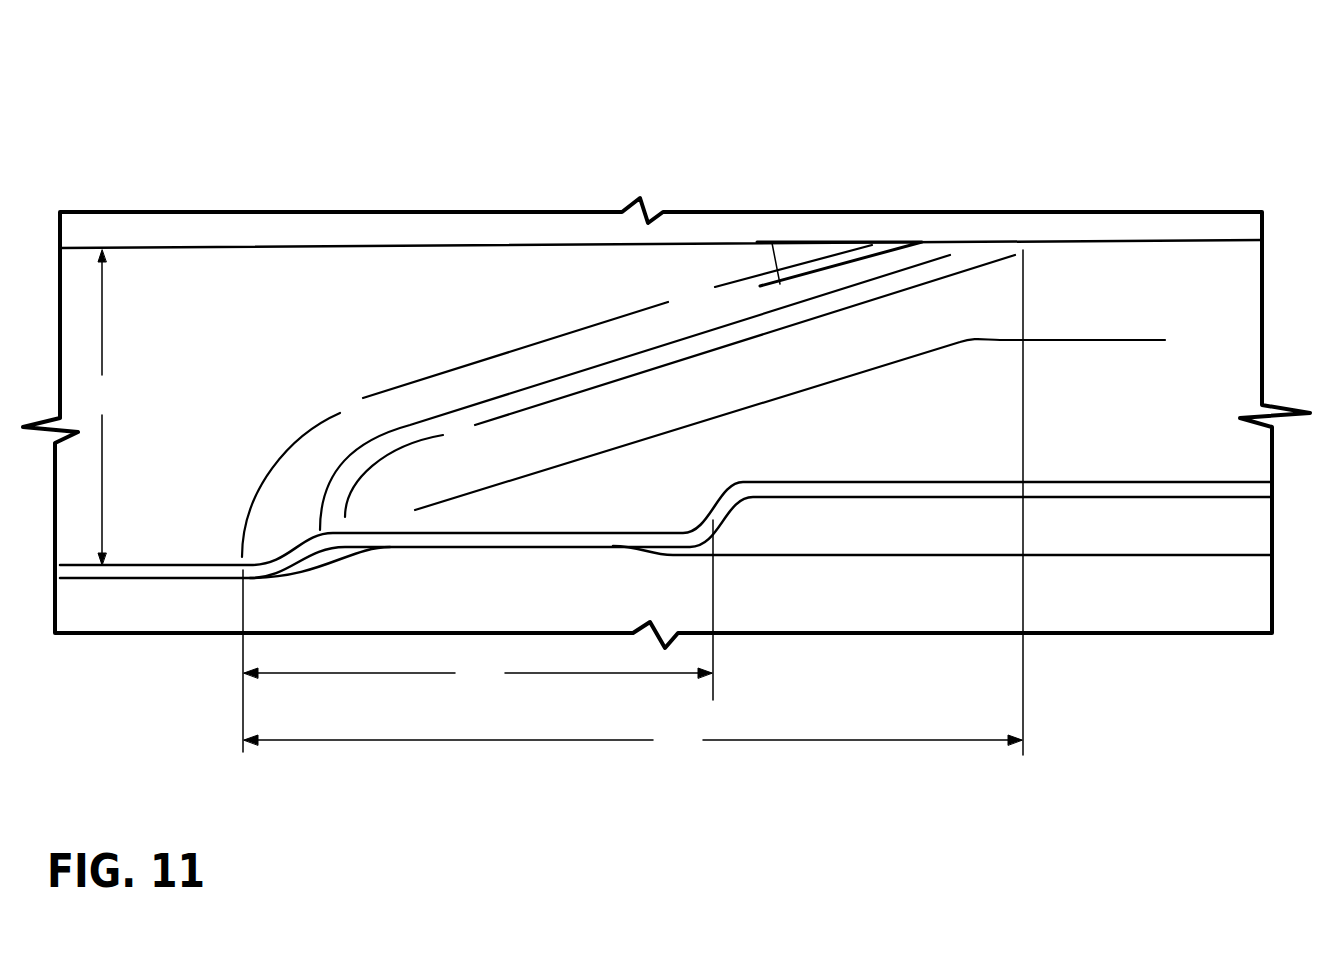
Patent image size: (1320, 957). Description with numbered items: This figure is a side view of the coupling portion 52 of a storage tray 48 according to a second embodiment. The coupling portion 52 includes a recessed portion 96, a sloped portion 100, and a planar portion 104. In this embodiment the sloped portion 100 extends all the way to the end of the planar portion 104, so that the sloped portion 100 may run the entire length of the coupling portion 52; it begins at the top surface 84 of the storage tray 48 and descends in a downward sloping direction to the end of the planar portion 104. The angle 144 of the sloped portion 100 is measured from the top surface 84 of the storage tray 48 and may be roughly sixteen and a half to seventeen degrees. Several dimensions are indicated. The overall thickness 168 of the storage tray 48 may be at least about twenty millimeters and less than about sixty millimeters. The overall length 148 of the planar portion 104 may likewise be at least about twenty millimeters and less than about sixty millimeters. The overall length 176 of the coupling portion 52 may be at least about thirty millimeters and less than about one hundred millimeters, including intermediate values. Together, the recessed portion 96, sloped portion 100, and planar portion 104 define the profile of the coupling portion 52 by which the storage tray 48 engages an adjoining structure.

The storage tray 48 is at (68, 147).
The coupling portion 52 is at (300, 475).
The top surface 84 is at (286, 247).
The recessed portion 96 is at (740, 502).
The sloped portion 100 is at (457, 385).
The planar portion 104 is at (562, 530).
The angle 144 is at (770, 258).
The overall length of the planar portion 148 is at (478, 636).
The overall thickness 168 is at (102, 407).
The overall length of the coupling portion 176 is at (633, 502).